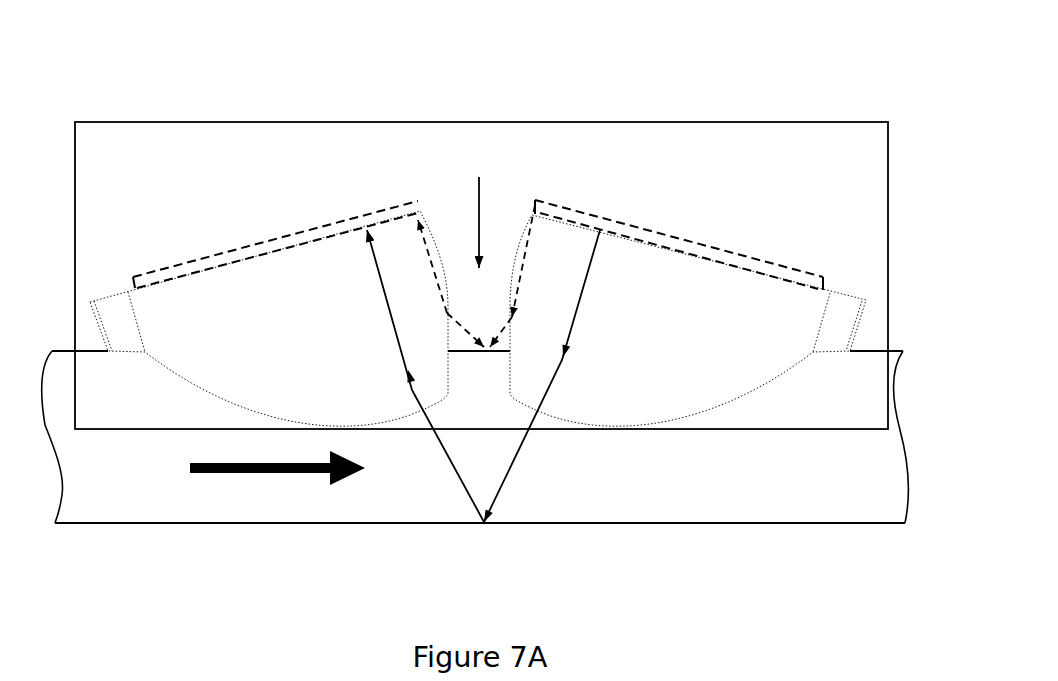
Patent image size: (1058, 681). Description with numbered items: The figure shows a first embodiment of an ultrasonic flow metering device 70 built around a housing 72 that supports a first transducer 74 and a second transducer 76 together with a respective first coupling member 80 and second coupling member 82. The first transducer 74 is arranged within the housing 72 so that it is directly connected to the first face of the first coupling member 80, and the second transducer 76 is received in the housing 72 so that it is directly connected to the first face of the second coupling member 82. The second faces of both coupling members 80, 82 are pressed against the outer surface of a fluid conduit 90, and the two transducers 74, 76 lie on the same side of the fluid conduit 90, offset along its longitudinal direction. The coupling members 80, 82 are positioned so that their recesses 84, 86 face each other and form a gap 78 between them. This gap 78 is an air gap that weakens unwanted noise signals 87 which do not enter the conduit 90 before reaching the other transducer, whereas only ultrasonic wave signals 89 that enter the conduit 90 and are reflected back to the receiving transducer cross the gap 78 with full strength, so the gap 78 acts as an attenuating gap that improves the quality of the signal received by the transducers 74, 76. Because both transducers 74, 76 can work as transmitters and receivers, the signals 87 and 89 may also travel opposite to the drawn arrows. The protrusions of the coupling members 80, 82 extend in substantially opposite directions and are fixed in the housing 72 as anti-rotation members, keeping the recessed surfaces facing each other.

The ultrasonic flow metering device 70 is at (205, 37).
The housing 72 is at (132, 112).
The first transducer 74 is at (230, 252).
The second transducer 76 is at (688, 252).
The gap 78 is at (480, 208).
The first coupling member 80 is at (213, 323).
The second coupling member 82 is at (710, 353).
The recess 84 is at (448, 303).
The recess 86 is at (510, 305).
The noise signals 87 is at (528, 262).
The ultrasonic wave signals 89 is at (576, 306).
The fluid conduit 90 is at (795, 463).